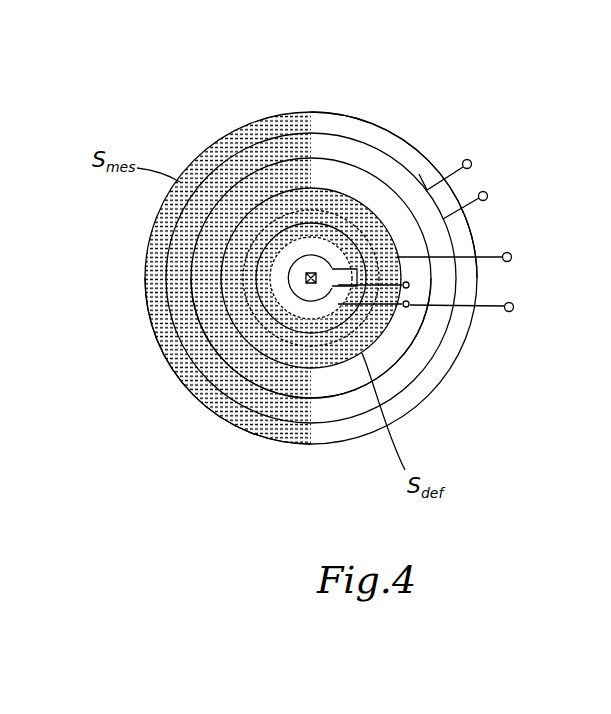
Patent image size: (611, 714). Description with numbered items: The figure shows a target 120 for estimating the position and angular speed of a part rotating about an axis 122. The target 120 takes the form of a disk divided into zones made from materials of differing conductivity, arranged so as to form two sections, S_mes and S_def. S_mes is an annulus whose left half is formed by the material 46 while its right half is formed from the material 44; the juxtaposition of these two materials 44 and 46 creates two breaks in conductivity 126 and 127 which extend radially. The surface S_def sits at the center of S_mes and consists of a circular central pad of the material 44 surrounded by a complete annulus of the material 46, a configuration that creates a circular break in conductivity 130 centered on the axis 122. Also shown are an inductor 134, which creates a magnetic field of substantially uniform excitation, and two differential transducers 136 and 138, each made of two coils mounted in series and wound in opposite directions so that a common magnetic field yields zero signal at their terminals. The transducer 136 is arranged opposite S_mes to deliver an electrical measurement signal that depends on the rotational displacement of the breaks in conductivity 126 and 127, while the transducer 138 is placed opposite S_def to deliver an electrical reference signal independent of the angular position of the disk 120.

The material 44 is at (440, 372).
The material 46 is at (183, 387).
The target 120 is at (225, 128).
The axis 122 is at (305, 277).
The break in conductivity 126 is at (335, 112).
The break in conductivity 127 is at (318, 405).
The break in conductivity 130 is at (350, 197).
The inductor 134 is at (419, 174).
The differential transducer 136 is at (488, 253).
The differential transducer 138 is at (400, 265).